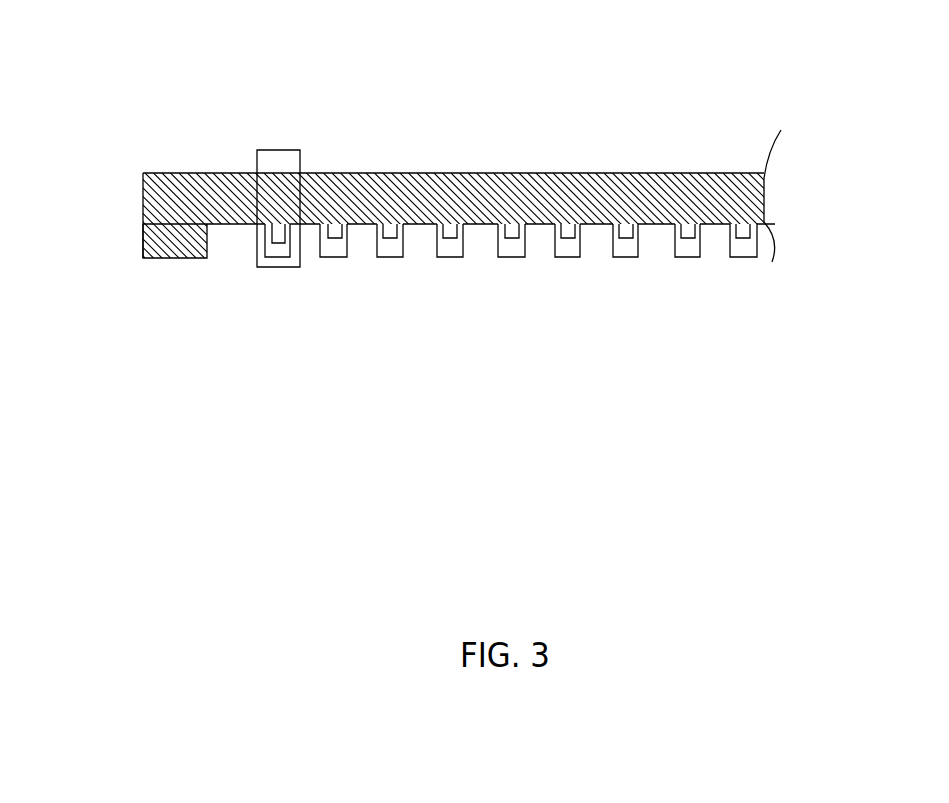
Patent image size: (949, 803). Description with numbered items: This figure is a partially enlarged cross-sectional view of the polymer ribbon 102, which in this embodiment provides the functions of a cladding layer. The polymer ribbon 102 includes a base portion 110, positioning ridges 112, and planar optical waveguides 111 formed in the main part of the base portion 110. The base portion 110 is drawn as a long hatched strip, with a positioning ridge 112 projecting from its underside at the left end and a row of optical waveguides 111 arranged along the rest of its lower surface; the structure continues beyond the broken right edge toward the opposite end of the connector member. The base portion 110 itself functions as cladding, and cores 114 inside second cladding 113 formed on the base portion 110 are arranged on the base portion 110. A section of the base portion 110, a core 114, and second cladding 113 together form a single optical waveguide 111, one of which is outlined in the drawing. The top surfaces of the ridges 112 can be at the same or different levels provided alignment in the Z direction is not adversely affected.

The polymer ribbon 102 is at (918, 72).
The base portion 110 is at (583, 185).
The optical waveguide 111 is at (298, 150).
The positioning ridge 112 is at (183, 240).
The second cladding 113 is at (277, 257).
The core 114 is at (277, 238).